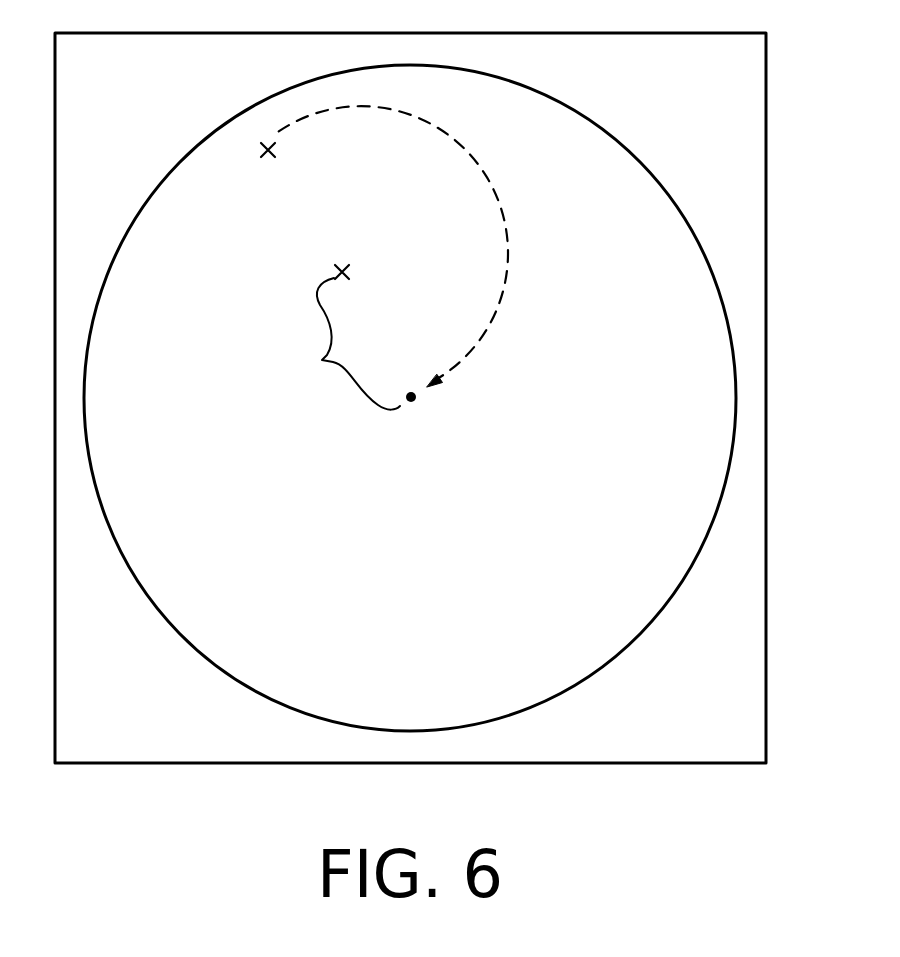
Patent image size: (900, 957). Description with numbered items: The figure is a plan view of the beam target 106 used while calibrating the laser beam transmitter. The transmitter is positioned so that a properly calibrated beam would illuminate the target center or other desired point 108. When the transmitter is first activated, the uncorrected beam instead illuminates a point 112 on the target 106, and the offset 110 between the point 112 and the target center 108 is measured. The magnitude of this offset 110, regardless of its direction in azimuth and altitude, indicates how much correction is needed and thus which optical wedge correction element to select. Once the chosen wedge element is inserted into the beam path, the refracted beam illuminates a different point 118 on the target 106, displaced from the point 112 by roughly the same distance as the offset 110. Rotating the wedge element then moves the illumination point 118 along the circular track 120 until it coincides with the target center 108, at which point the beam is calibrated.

The beam target 106 is at (750, 600).
The target center 108 is at (414, 402).
The offset 110 is at (329, 344).
The illuminated point 112 is at (346, 264).
The refracted illumination point 118 is at (266, 160).
The circular track 120 is at (498, 273).